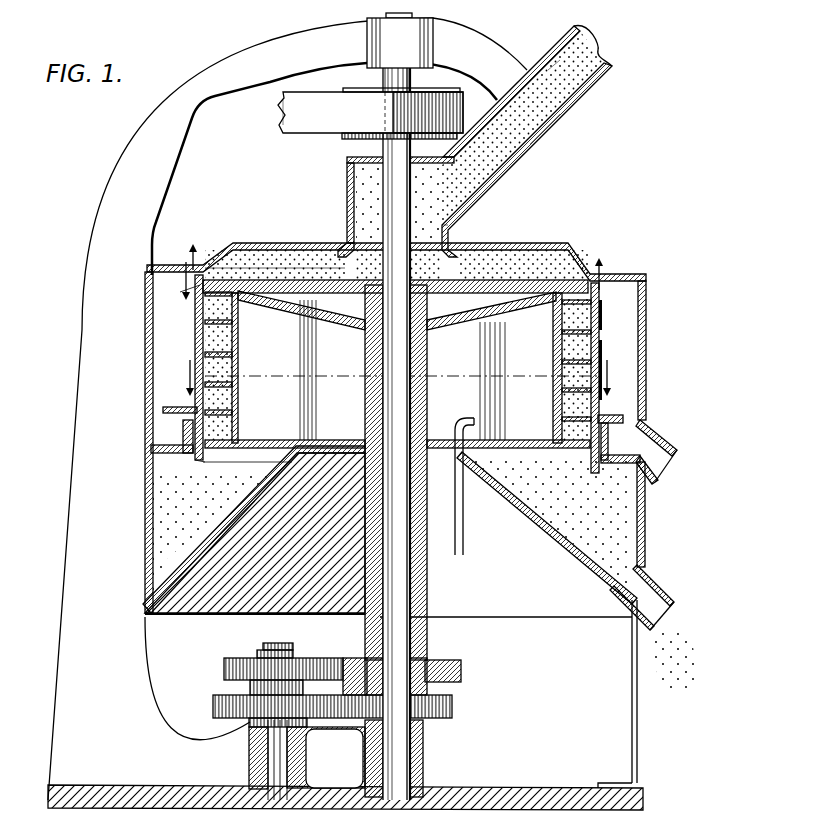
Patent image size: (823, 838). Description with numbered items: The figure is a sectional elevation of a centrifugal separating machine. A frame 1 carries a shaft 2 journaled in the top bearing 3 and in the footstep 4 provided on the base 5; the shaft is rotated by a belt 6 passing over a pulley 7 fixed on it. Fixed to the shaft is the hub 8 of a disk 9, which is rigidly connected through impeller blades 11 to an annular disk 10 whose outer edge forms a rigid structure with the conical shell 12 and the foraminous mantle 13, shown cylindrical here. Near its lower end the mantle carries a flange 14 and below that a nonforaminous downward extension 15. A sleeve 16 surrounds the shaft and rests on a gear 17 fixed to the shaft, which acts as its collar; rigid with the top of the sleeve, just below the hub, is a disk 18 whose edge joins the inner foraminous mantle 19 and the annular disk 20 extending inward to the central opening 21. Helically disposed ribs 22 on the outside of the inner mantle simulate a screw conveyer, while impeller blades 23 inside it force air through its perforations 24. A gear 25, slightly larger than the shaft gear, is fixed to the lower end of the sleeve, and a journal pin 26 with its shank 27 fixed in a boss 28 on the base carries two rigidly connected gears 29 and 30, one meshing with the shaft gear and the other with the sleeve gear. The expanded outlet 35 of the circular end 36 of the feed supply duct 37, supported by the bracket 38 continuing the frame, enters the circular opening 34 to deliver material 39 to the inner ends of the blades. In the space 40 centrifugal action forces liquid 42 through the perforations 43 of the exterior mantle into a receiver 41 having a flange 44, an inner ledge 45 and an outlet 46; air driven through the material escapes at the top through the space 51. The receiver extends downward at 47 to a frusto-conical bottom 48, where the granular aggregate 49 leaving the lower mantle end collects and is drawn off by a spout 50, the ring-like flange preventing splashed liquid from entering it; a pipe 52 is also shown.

The frame 1 is at (148, 135).
The shaft 2 is at (390, 16).
The top bearing 3 is at (432, 33).
The footstep 4 is at (446, 760).
The base 5 is at (132, 796).
The belt 6 is at (279, 110).
The pulley 7 is at (345, 90).
The hub 8 is at (430, 305).
The disk 9 is at (268, 252).
The annular disk 10 is at (260, 250).
The impeller blades 11 is at (305, 248).
The conical shell 12 is at (580, 262).
The foraminous mantle 13 is at (200, 328).
The flange 14 is at (176, 408).
The nonforaminous downward extension 15 is at (200, 463).
The sleeve 16 is at (430, 593).
The gear 17 is at (453, 708).
The disk 18 is at (462, 322).
The foraminous mantle 19 is at (240, 330).
The annular disk 20 is at (268, 444).
The central opening 21 is at (336, 444).
The helically disposed ribs 22 is at (130, 345).
The impeller blades 23 is at (316, 356).
The perforations 24 is at (228, 396).
The gear 25 is at (462, 671).
The journal pin 26 is at (282, 668).
The shank 27 is at (262, 752).
The boss 28 is at (308, 746).
The gear 29 is at (214, 706).
The gear 30 is at (223, 668).
The circular opening 34 is at (338, 262).
The expanded outlet 35 is at (455, 246).
The circular end 36 is at (346, 183).
The feed supply duct 37 is at (518, 159).
The bracket 38 is at (484, 44).
The material 39 is at (568, 104).
The space 40 is at (604, 300).
The receiver 41 is at (648, 368).
The liquid 42 is at (630, 315).
The perforations 43 is at (603, 330).
The flange 44 is at (168, 450).
The inner ledge 45 is at (184, 432).
The outlet 46 is at (670, 446).
The downward extension of receiver 47 is at (646, 508).
The frusto-conical bottom 48 is at (178, 570).
The granular aggregate 49 is at (165, 510).
The spout 50 is at (662, 588).
The space 51 is at (201, 272).
The pipe 52 is at (466, 521).